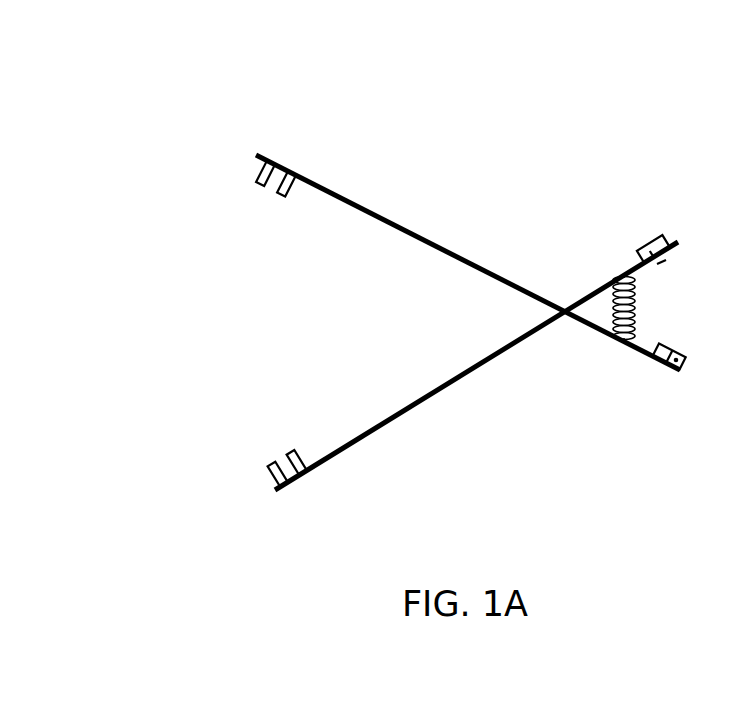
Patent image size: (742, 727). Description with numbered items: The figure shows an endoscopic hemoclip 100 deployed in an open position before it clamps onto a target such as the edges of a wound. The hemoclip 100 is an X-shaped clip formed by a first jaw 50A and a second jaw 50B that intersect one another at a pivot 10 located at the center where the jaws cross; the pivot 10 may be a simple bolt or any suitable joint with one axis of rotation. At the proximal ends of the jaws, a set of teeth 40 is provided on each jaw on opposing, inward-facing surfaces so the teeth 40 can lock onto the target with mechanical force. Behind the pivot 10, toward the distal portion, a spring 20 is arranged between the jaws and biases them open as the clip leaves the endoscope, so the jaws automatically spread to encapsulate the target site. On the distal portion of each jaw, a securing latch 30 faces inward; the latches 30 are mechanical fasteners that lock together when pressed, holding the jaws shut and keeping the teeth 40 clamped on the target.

The hemoclip 100 is at (678, 28).
The pivot 10 is at (558, 304).
The spring 20 is at (636, 350).
The securing latch 30 is at (676, 240).
The set of teeth 40 is at (260, 185).
The first jaw 50A is at (397, 225).
The second jaw 50B is at (368, 432).